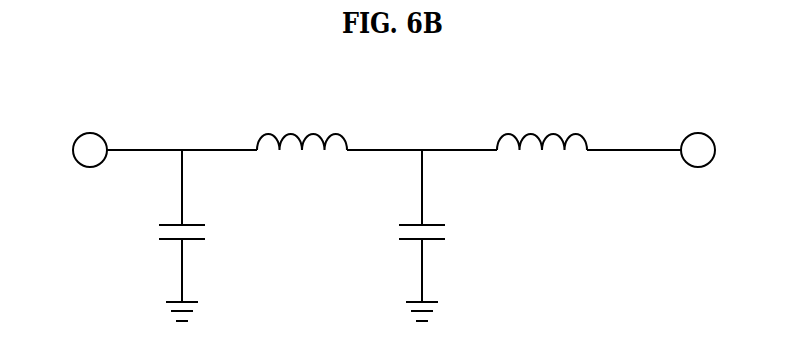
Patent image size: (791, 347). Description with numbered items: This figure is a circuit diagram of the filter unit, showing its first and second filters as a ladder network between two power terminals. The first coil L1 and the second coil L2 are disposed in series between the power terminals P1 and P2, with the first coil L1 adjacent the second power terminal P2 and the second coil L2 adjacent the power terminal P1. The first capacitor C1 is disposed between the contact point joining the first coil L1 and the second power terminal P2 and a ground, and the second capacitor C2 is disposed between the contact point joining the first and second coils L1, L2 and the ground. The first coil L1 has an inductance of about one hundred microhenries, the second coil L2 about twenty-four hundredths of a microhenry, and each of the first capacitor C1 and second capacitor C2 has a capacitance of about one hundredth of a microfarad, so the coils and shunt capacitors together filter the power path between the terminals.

The power terminal P1 is at (715, 150).
The second power terminal P2 is at (72, 150).
The first coil L1 is at (302, 120).
The second coil L2 is at (542, 119).
The first capacitor C1 is at (202, 235).
The second capacitor C2 is at (442, 235).